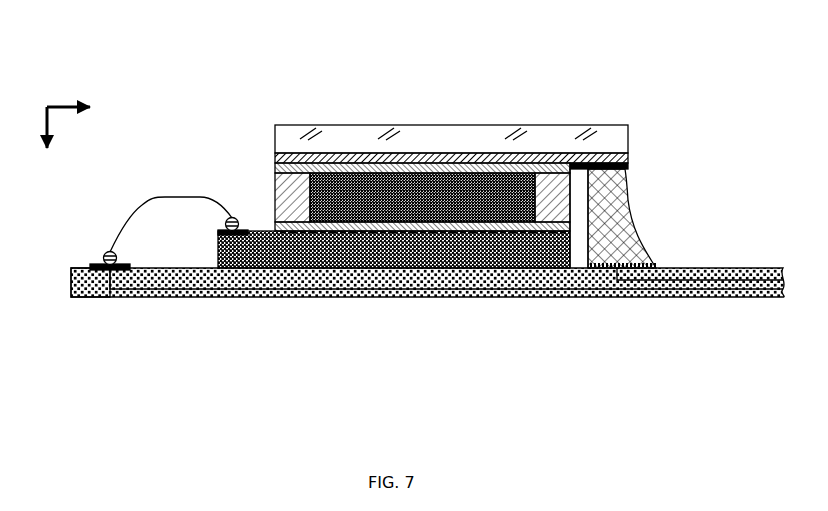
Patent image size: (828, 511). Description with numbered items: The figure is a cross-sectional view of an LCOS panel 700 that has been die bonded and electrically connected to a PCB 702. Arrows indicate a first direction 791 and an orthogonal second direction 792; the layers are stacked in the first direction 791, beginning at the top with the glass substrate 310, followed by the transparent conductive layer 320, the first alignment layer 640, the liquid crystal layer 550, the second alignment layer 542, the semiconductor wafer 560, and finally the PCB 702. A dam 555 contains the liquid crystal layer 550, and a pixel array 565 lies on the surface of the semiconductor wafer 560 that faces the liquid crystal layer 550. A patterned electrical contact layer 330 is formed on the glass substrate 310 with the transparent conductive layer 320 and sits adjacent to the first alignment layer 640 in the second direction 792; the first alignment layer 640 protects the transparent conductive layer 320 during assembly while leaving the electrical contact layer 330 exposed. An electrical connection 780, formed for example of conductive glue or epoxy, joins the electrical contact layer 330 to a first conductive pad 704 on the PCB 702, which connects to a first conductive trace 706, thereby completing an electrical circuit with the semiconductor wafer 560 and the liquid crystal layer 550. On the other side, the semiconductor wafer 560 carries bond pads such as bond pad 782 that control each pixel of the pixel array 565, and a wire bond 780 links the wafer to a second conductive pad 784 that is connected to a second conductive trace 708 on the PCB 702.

The LCOS panel 700 is at (152, 40).
The first direction 791 is at (45, 114).
The second direction 792 is at (65, 107).
The glass substrate 310 is at (464, 147).
The transparent conductive layer 320 is at (275, 157).
The first alignment layer 640 is at (275, 168).
The electrical contact layer 330 is at (630, 167).
The dam 555 is at (275, 197).
The liquid crystal layer 550 is at (436, 206).
The second alignment layer 542 is at (275, 227).
The semiconductor wafer 560 is at (406, 257).
The pixel array 565 is at (467, 236).
The bond pad 782 is at (238, 238).
The second conductive pad 784 is at (128, 264).
The electrical connection / wire bond 780 is at (142, 213).
The second conductive trace 708 is at (160, 297).
The PCB 702 is at (80, 272).
The first conductive trace 706 is at (723, 280).
The first conductive pad 704 is at (583, 268).